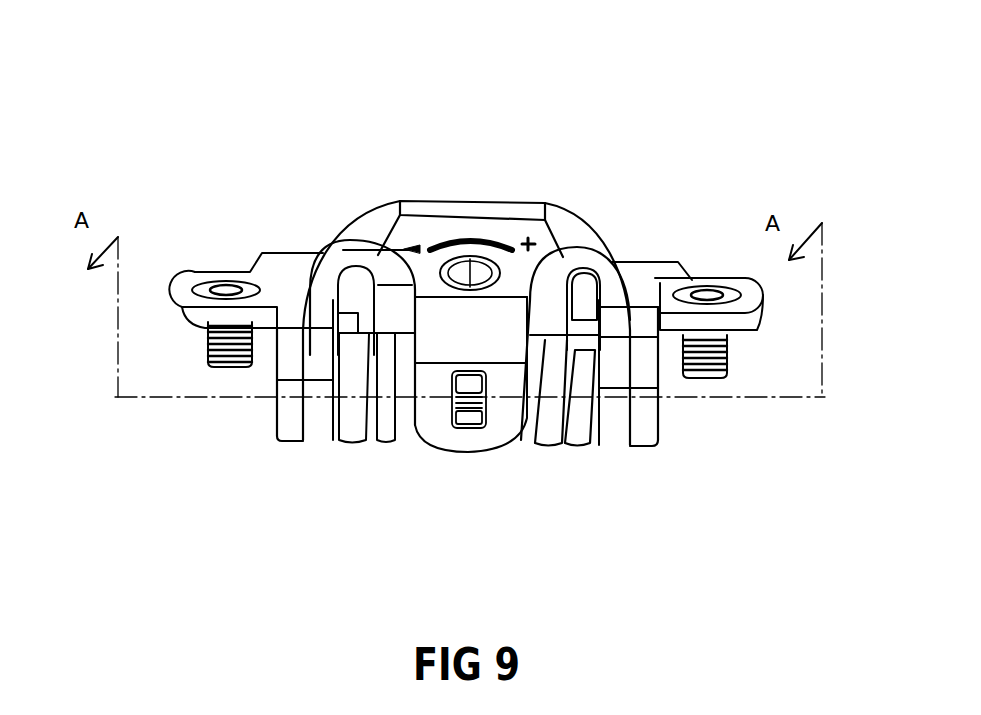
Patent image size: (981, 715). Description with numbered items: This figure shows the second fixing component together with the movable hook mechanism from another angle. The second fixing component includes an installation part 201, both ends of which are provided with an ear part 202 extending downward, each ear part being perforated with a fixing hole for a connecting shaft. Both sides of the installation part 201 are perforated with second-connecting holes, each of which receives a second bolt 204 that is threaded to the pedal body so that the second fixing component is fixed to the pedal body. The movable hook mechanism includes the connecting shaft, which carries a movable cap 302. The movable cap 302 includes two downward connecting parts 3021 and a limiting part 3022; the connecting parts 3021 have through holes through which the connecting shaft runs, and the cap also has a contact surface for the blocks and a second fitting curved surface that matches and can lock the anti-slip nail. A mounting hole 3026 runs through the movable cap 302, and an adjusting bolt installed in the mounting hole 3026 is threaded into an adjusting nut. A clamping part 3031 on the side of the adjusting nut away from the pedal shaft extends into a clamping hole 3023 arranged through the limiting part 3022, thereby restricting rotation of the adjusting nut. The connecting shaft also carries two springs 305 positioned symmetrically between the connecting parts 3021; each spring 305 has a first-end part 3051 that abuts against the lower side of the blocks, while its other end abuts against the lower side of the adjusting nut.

The installation part 201 is at (262, 252).
The ear part 202 is at (297, 417).
The second bolt 204 is at (727, 350).
The movable cap 302 is at (540, 257).
The spring 305 is at (360, 390).
The connecting part 3021 is at (615, 415).
The limiting part 3022 is at (500, 410).
The clamping hole 3023 is at (473, 418).
The mounting hole 3026 is at (437, 267).
The clamping part 3031 is at (470, 383).
The first-end part 3051 is at (637, 290).